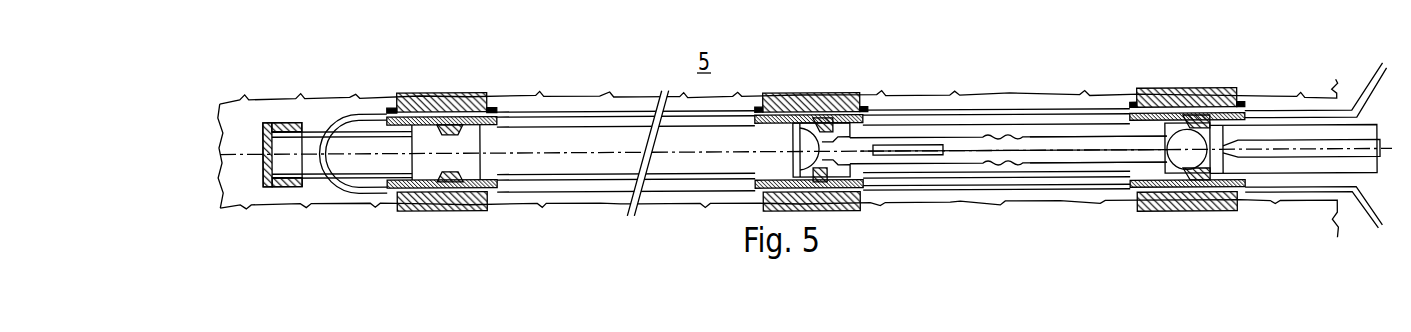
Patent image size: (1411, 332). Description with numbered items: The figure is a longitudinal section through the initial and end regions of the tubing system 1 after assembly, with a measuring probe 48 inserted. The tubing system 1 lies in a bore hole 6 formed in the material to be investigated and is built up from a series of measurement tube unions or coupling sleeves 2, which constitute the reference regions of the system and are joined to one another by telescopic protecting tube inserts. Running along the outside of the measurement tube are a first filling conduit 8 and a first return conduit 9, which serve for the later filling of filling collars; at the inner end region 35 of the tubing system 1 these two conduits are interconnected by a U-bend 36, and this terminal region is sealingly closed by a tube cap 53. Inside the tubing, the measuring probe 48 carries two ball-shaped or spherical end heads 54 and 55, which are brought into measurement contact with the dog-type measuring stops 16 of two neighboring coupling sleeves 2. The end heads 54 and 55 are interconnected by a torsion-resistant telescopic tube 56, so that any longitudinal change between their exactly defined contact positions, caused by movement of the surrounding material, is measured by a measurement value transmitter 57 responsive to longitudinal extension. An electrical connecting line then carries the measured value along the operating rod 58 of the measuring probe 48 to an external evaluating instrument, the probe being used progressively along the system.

The tubing system 1 is at (928, 112).
The measurement tube union or coupling sleeve 2 is at (803, 112).
The bore hole 6 is at (248, 190).
The first filling conduit 8 is at (553, 125).
The first return conduit 9 is at (553, 192).
The measuring stop 16 is at (818, 123).
The inner end region 35 is at (303, 143).
The U-bend 36 is at (343, 137).
The measuring probe 48 is at (1043, 147).
The tube cap 53 is at (270, 123).
The ball-shaped end head 54 is at (823, 137).
The ball-shaped end head 55 is at (1178, 137).
The torsion-resistant telescopic tube 56 is at (1085, 138).
The measurement value transmitter 57 is at (903, 150).
The operating rod 58 is at (1353, 140).